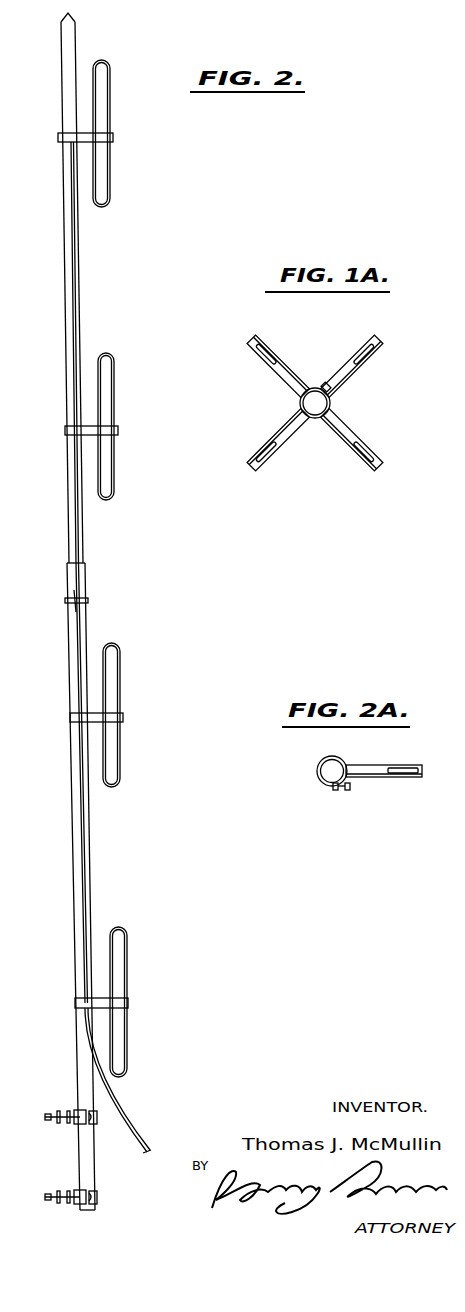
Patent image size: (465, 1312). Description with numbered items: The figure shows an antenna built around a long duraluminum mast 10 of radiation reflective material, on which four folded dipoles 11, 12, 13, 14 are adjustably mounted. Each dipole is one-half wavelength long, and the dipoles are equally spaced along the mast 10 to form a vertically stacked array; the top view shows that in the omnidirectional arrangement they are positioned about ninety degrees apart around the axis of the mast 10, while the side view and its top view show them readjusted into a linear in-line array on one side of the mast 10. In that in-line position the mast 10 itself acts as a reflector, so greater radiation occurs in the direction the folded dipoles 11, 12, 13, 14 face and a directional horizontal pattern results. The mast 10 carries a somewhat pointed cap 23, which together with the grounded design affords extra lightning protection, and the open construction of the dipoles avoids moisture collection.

In FIG. 2, the mast 10 is at (73, 650).
In FIG. 1A, the mast 10 is at (330, 408).
In FIG. 2, the folded dipole 11 is at (127, 1046).
In FIG. 1A, the folded dipole 11 is at (268, 463).
In FIG. 2A, the folded dipole 11 is at (369, 796).
In FIG. 2, the folded dipole 12 is at (120, 753).
In FIG. 1A, the folded dipole 12 is at (268, 367).
In FIG. 2A, the folded dipole 12 is at (369, 796).
In FIG. 2, the folded dipole 13 is at (113, 468).
In FIG. 1A, the folded dipole 13 is at (363, 372).
In FIG. 2A, the folded dipole 13 is at (369, 796).
In FIG. 2, the folded dipole 14 is at (110, 101).
In FIG. 1A, the folded dipole 14 is at (360, 463).
In FIG. 2A, the folded dipole 14 is at (383, 778).
In FIG. 1A, the cap 23 is at (316, 413).